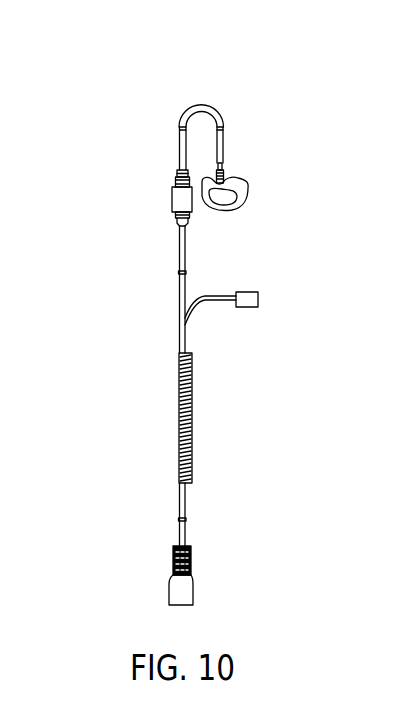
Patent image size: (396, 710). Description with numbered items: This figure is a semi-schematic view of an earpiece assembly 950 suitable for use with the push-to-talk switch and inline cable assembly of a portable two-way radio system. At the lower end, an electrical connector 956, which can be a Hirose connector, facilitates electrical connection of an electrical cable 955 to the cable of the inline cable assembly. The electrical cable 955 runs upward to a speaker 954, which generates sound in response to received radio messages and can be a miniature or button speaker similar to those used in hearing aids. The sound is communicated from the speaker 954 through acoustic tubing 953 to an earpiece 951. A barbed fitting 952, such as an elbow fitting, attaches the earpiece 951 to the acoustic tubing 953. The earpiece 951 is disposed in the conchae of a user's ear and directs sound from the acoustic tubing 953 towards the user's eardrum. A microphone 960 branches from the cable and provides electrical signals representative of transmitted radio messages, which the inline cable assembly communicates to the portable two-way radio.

The earpiece assembly 950 is at (143, 339).
The earpiece 951 is at (245, 203).
The barbed fitting 952 is at (223, 165).
The acoustic tubing 953 is at (206, 100).
The speaker 954 is at (172, 190).
The electrical cable 955 is at (193, 409).
The connector 956 is at (193, 588).
The microphone 960 is at (248, 292).